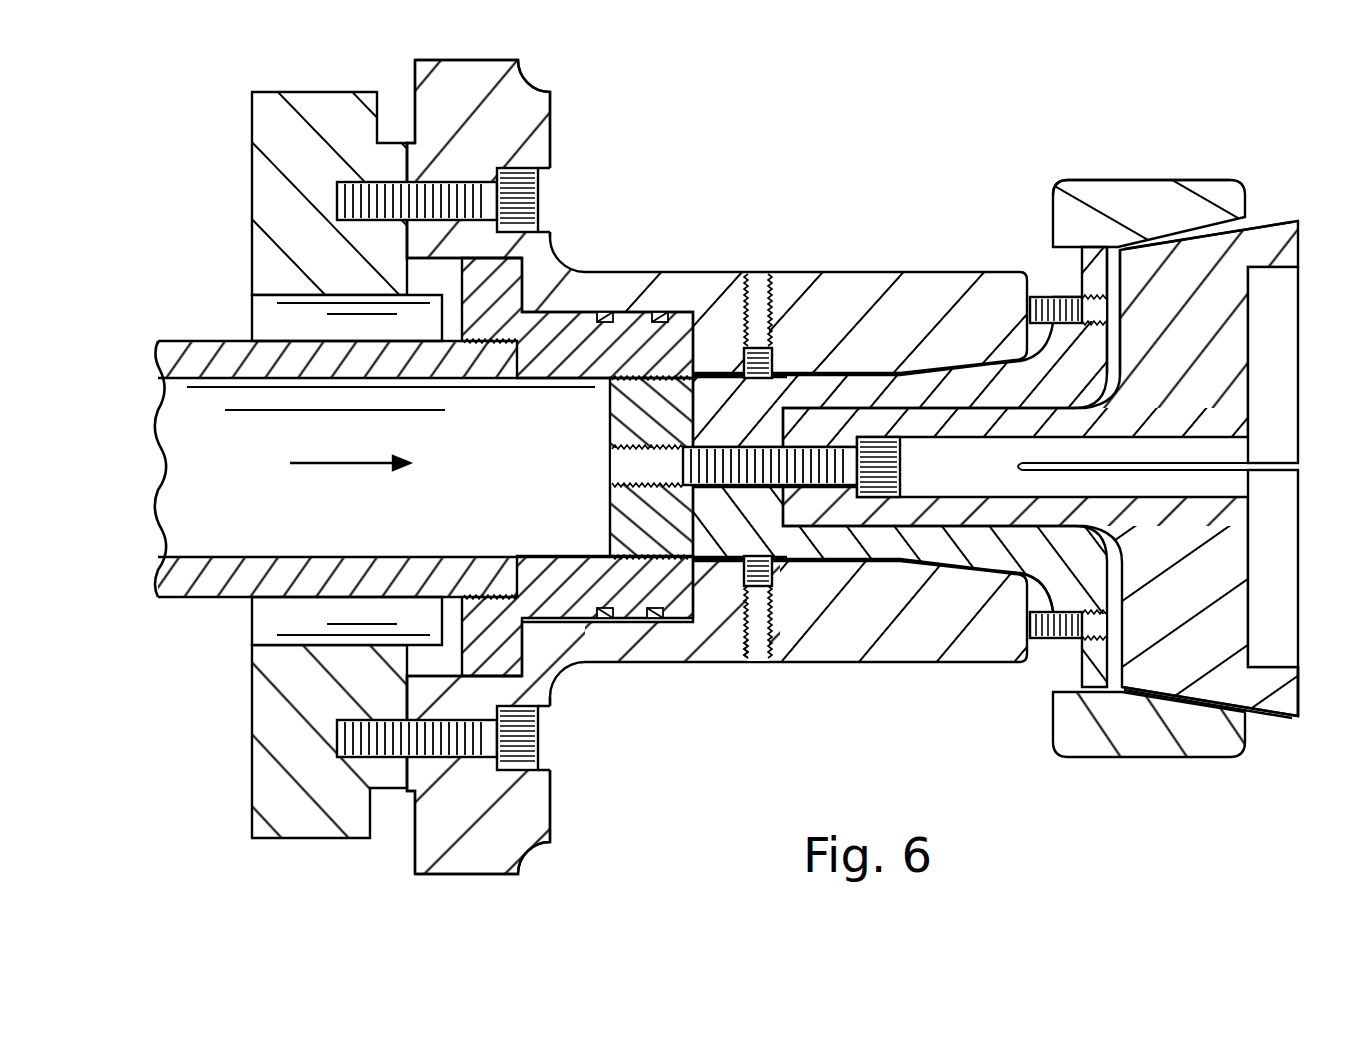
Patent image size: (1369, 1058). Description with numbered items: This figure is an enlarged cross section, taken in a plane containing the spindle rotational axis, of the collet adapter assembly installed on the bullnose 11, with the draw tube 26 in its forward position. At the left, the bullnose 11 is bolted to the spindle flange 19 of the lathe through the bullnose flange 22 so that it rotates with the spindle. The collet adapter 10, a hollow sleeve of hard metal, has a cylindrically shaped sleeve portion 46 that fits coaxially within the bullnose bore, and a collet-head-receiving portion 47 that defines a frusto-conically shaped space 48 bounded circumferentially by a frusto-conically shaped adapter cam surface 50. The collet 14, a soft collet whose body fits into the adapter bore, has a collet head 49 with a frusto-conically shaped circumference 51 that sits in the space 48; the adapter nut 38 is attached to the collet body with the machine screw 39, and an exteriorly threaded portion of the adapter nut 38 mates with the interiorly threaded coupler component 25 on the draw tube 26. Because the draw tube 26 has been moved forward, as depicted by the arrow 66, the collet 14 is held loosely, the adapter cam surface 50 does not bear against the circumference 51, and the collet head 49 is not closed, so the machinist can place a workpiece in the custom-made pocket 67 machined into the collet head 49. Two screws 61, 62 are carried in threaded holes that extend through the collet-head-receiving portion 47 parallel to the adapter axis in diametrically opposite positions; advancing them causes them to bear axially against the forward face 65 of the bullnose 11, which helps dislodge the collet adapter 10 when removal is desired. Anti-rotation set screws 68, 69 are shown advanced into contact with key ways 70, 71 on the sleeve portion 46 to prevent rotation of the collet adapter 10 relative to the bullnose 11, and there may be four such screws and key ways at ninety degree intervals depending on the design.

The collet adapter 10 is at (1050, 172).
The bullnose 11 is at (1003, 272).
The collet 14 is at (1265, 237).
The spindle flange 19 is at (258, 112).
The bullnose flange 22 is at (540, 101).
The coupler component 25 is at (585, 330).
The draw tube 26 is at (220, 345).
The adapter nut 38 is at (642, 556).
The machine screw 39 is at (880, 495).
The sleeve portion 46 is at (855, 385).
The collet-head-receiving portion 47 is at (1206, 183).
The frusto-conically shaped space 48 is at (1122, 250).
The collet head 49 is at (1262, 238).
The adapter cam surface 50 is at (1225, 740).
The frusto-conically shaped circumference 51 is at (1268, 720).
The screw 61 is at (1062, 640).
The screw 62 is at (1070, 297).
The forward face 65 is at (1045, 680).
The arrow 66 is at (325, 472).
The custom-made pocket 67 is at (1293, 630).
The anti-rotation set screw 68 is at (755, 655).
The anti-rotation set screw 69 is at (758, 300).
The key way 70 is at (766, 562).
The key way 71 is at (788, 378).